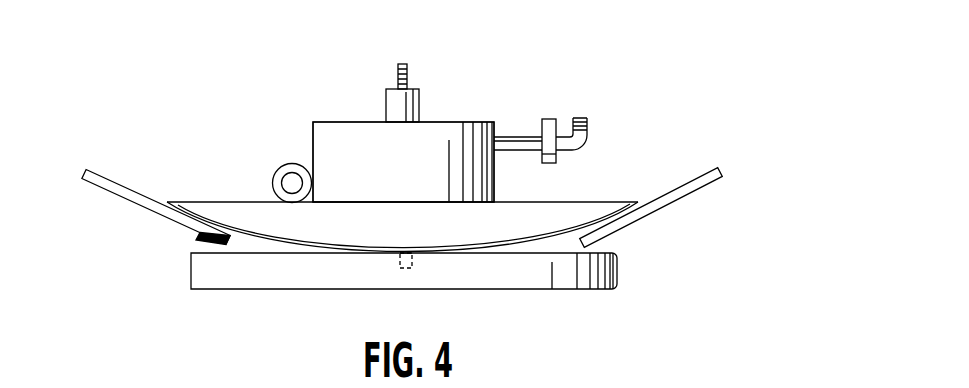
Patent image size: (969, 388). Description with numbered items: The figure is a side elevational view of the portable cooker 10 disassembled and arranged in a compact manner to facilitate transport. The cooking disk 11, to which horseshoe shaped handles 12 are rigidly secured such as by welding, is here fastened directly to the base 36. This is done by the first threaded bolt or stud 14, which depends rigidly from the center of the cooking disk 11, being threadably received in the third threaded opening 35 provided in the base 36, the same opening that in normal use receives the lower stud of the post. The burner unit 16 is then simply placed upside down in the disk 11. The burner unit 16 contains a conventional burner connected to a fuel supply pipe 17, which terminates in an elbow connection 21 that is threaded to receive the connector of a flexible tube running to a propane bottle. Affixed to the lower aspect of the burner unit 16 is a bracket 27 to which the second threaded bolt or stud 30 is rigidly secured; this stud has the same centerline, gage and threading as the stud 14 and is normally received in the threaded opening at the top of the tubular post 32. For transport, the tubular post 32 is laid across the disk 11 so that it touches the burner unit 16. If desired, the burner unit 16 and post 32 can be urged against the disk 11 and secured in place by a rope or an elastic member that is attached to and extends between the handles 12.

The portable cooker 10 is at (263, 70).
The cooking disk 11 is at (612, 190).
The horseshoe shaped handles 12 is at (108, 177).
The first threaded bolt or stud 14 is at (413, 262).
The burner unit 16 is at (452, 130).
The fuel supply pipe 17 is at (547, 120).
The elbow connection 21 is at (586, 130).
The bracket 27 is at (392, 99).
The second threaded bolt or stud 30 is at (407, 73).
The tubular post 32 is at (278, 163).
The third threaded opening 35 is at (400, 268).
The base 36 is at (618, 274).